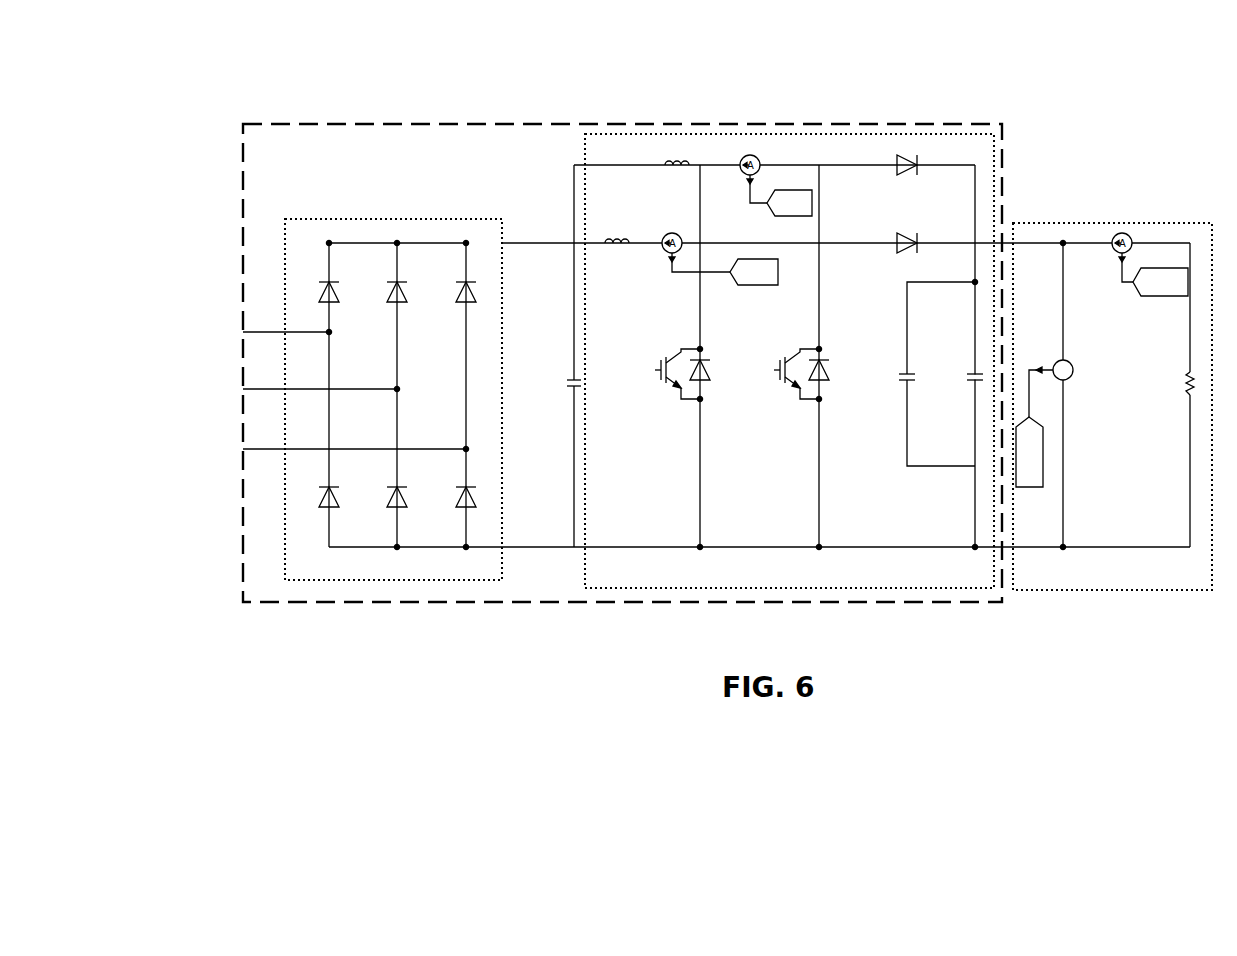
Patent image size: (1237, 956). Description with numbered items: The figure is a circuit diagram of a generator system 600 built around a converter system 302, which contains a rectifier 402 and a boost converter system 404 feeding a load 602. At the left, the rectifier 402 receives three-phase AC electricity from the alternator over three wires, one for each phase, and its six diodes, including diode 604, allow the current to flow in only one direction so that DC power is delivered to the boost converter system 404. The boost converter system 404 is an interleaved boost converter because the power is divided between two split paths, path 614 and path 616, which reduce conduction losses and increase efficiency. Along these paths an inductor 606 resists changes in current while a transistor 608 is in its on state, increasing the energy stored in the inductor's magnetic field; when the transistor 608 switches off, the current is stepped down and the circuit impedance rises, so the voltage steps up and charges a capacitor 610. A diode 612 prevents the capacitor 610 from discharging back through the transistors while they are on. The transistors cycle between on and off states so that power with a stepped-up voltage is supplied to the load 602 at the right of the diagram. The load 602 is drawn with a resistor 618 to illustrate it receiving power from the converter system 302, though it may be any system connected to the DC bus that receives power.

The power conversion system 600 is at (241, 93).
The converter system 302 is at (622, 363).
The rectifier 402 is at (343, 211).
The boost converter system 404 is at (611, 121).
The load 602 is at (1080, 212).
The diode 604 is at (418, 323).
The inductor 606 is at (628, 266).
The transistor 608 is at (720, 403).
The capacitor 610 is at (879, 402).
The diode 612 is at (887, 268).
The path 614 is at (559, 193).
The path 616 is at (642, 229).
The resistor 618 is at (1169, 410).